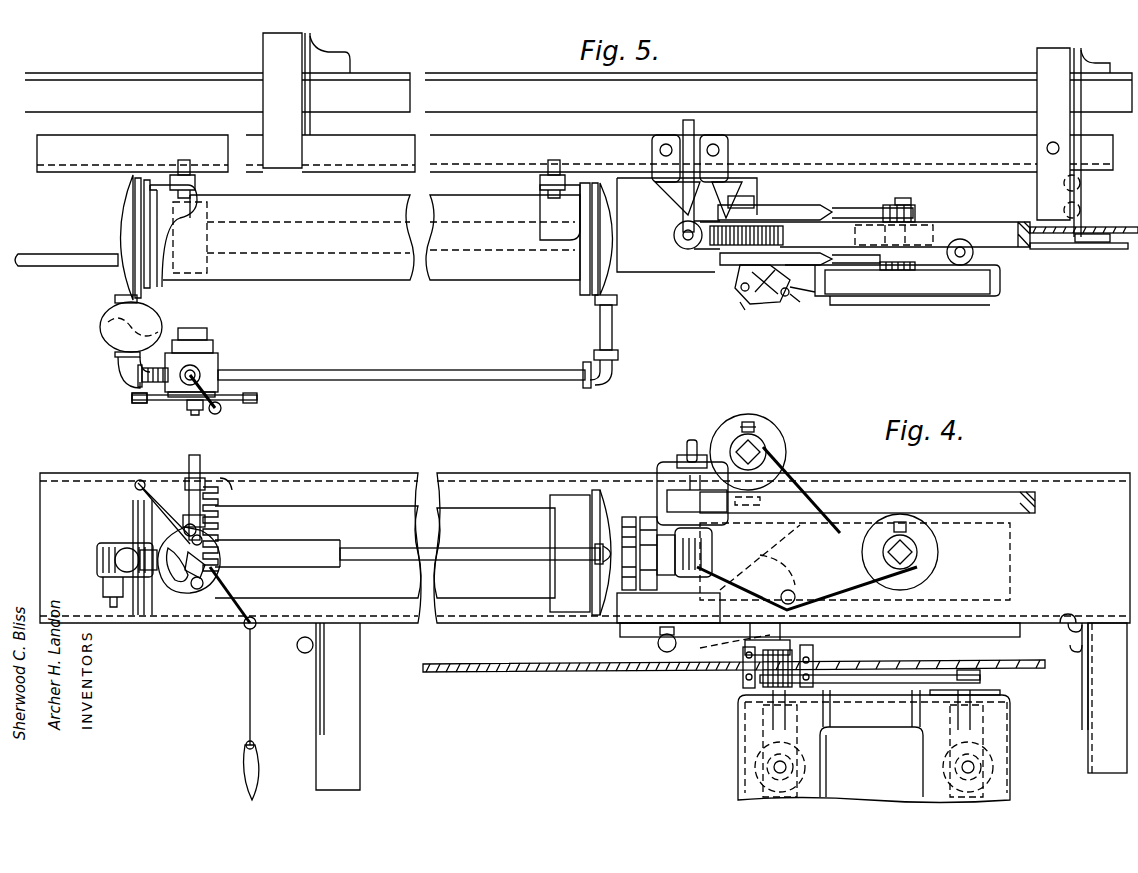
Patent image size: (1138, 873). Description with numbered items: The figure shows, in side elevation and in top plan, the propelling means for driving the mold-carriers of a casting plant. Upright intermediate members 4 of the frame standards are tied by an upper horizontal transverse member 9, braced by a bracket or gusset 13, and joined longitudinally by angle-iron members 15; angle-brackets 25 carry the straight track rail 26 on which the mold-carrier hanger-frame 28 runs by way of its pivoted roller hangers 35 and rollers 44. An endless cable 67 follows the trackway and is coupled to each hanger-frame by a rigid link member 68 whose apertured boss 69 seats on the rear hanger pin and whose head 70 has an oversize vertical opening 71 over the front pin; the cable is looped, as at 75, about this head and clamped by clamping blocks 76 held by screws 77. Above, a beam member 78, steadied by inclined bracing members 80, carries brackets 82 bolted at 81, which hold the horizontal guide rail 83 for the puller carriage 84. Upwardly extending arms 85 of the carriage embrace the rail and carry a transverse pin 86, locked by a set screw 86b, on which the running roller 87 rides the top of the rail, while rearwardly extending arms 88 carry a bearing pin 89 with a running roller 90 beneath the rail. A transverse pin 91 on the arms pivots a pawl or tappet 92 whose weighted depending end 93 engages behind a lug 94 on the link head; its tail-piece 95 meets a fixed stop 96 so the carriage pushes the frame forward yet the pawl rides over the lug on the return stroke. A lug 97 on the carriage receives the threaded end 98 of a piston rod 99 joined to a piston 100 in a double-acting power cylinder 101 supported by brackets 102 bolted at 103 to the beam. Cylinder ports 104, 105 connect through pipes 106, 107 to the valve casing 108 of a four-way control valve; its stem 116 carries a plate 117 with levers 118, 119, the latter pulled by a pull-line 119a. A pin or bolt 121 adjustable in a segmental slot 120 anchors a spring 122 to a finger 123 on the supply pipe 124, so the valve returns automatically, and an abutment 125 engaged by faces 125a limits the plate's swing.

In FIG. 5, the intermediate members 4 is at (325, 58).
In FIG. 4, the intermediate members 4 is at (360, 735).
In FIG. 5, the upper horizontal transverse member 9 is at (263, 58).
In FIG. 4, the upper horizontal transverse member 9 is at (316, 640).
In FIG. 5, the bracket or gusset 13 is at (312, 90).
In FIG. 4, the bracket or gusset 13 is at (316, 705).
In FIG. 5, the longitudinally extending member 15 is at (905, 78).
In FIG. 5, the angle-bracket 25 is at (1082, 185).
In FIG. 5, the track rail 26 is at (1095, 252).
In FIG. 5, the hanger-frame member 28 is at (975, 296).
In FIG. 4, the hanger-frame member 28 is at (738, 738).
In FIG. 4, the roller hanger 35 is at (985, 735).
In FIG. 4, the rollers 44 is at (755, 773).
In FIG. 5, the cable 67 is at (1060, 240).
In FIG. 4, the cable 67 is at (500, 675).
In FIG. 5, the link member 68 is at (843, 296).
In FIG. 4, the link member 68 is at (890, 694).
In FIG. 5, the apertured boss 69 is at (955, 268).
In FIG. 4, the apertured boss 69 is at (985, 682).
In FIG. 5, the head 70 is at (745, 302).
In FIG. 4, the head 70 is at (790, 657).
In FIG. 5, the vertical opening 71 is at (805, 294).
In FIG. 5, the cable loop 75 is at (765, 302).
In FIG. 5, the clamping block 76 is at (740, 288).
In FIG. 4, the clamping block 76 is at (743, 675).
In FIG. 5, the screw 77 is at (740, 302).
In FIG. 4, the screw 77 is at (743, 657).
In FIG. 5, the beam member 78 is at (765, 145).
In FIG. 4, the beam member 78 is at (500, 475).
In FIG. 5, the inclined bracing member 80 is at (318, 140).
In FIG. 4, the inclined bracing member 80 is at (310, 473).
In FIG. 5, the bolt 81 is at (660, 138).
In FIG. 5, the bracket 82 is at (695, 140).
In FIG. 4, the bracket 82 is at (668, 465).
In FIG. 5, the guide-bar or rail 83 is at (968, 225).
In FIG. 4, the guide-bar or rail 83 is at (975, 492).
In FIG. 5, the puller carriage 84 is at (820, 215).
In FIG. 4, the puller carriage 84 is at (855, 548).
In FIG. 5, the upwardly extending arm 85 is at (795, 210).
In FIG. 4, the upwardly extending arm 85 is at (800, 475).
In FIG. 5, the transverse pin 86 is at (754, 198).
In FIG. 4, the transverse pin 86 is at (765, 450).
In FIG. 4, the set screw 86b is at (760, 440).
In FIG. 5, the running roller 87 is at (760, 237).
In FIG. 4, the running roller 87 is at (746, 420).
In FIG. 5, the rearwardly extending arm 88 is at (870, 205).
In FIG. 4, the rearwardly extending arm 88 is at (908, 590).
In FIG. 5, the bearing pin 89 is at (910, 198).
In FIG. 4, the bearing pin 89 is at (910, 548).
In FIG. 5, the running roller 90 is at (915, 225).
In FIG. 4, the running roller 90 is at (935, 565).
In FIG. 4, the transverse pin 91 is at (795, 590).
In FIG. 4, the pawl or tappet 92 is at (835, 595).
In FIG. 4, the depending end 93 is at (752, 640).
In FIG. 4, the lug or projection 94 is at (730, 647).
In FIG. 4, the tail-piece 95 is at (772, 557).
In FIG. 4, the fixed stop 96 is at (712, 577).
In FIG. 4, the lug 97 is at (660, 623).
In FIG. 4, the threaded connection 98 is at (650, 518).
In FIG. 5, the piston rod 99 is at (320, 258).
In FIG. 4, the piston rod 99 is at (650, 623).
In FIG. 5, the piston 100 is at (207, 210).
In FIG. 5, the power cylinder 101 is at (520, 268).
In FIG. 4, the power cylinder 101 is at (395, 490).
In FIG. 5, the bracket 102 is at (165, 175).
In FIG. 4, the bracket 102 is at (168, 490).
In FIG. 5, the bolt 103 is at (185, 160).
In FIG. 5, the combined inlet and exhaust port 104 is at (118, 280).
In FIG. 5, the combined inlet and exhaust port 105 is at (605, 292).
In FIG. 5, the pipe 106 is at (122, 380).
In FIG. 4, the pipe 106 is at (105, 560).
In FIG. 5, the pipe 107 is at (455, 355).
In FIG. 4, the pipe 107 is at (525, 538).
In FIG. 5, the valve casing 108 is at (172, 332).
In FIG. 5, the external stem 116 is at (205, 412).
In FIG. 4, the external stem 116 is at (185, 585).
In FIG. 4, the plate 117 is at (210, 565).
In FIG. 5, the lever 118 is at (135, 400).
In FIG. 4, the lever 118 is at (138, 490).
In FIG. 5, the lever 119 is at (257, 398).
In FIG. 4, the lever 119 is at (228, 640).
In FIG. 4, the pull-line 119a is at (246, 686).
In FIG. 4, the segmental slot 120 is at (185, 595).
In FIG. 4, the pin or bolt 121 is at (205, 583).
In FIG. 4, the spring 122 is at (220, 520).
In FIG. 5, the finger 123 is at (220, 378).
In FIG. 4, the finger 123 is at (222, 478).
In FIG. 5, the supply pipe 124 is at (200, 370).
In FIG. 4, the supply pipe 124 is at (188, 458).
In FIG. 4, the abutment 125 is at (184, 530).
In FIG. 4, the faces 125a is at (275, 545).